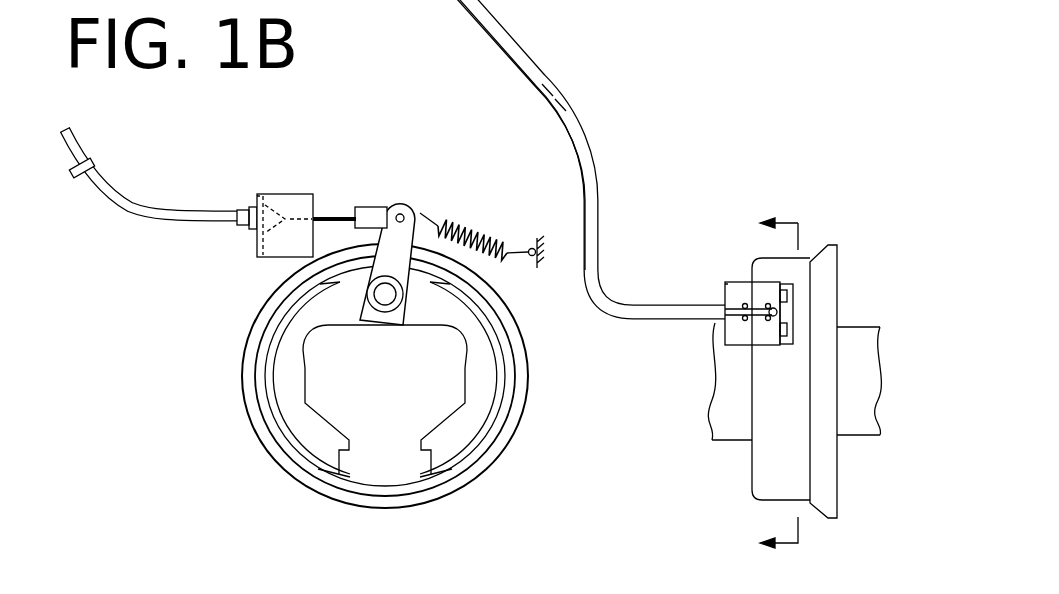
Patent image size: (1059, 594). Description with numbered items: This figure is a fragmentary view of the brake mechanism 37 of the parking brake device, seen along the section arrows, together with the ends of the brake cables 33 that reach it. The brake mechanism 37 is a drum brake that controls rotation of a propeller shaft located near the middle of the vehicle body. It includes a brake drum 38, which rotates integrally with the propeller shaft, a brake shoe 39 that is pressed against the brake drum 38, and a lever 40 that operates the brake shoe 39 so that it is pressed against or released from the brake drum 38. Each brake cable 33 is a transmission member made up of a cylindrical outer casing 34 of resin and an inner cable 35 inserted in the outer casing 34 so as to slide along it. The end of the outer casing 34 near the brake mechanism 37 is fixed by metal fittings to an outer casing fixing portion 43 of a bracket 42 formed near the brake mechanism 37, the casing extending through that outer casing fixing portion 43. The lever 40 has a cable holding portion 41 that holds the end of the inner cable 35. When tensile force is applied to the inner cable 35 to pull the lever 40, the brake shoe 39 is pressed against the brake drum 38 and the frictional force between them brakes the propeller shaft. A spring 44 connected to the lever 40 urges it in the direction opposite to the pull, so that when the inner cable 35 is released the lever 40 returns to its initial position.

The brake cable 33 is at (178, 234).
The outer casing 34 is at (428, 0).
The inner cable 35 is at (334, 212).
The brake mechanism 37 is at (834, 246).
The brake drum 38 is at (503, 443).
The brake shoe 39 is at (272, 402).
The lever 40 is at (393, 250).
The cable holding portion 41 is at (374, 206).
The bracket 42 is at (284, 196).
The outer casing fixing portion 43 is at (256, 198).
The spring 44 is at (477, 226).